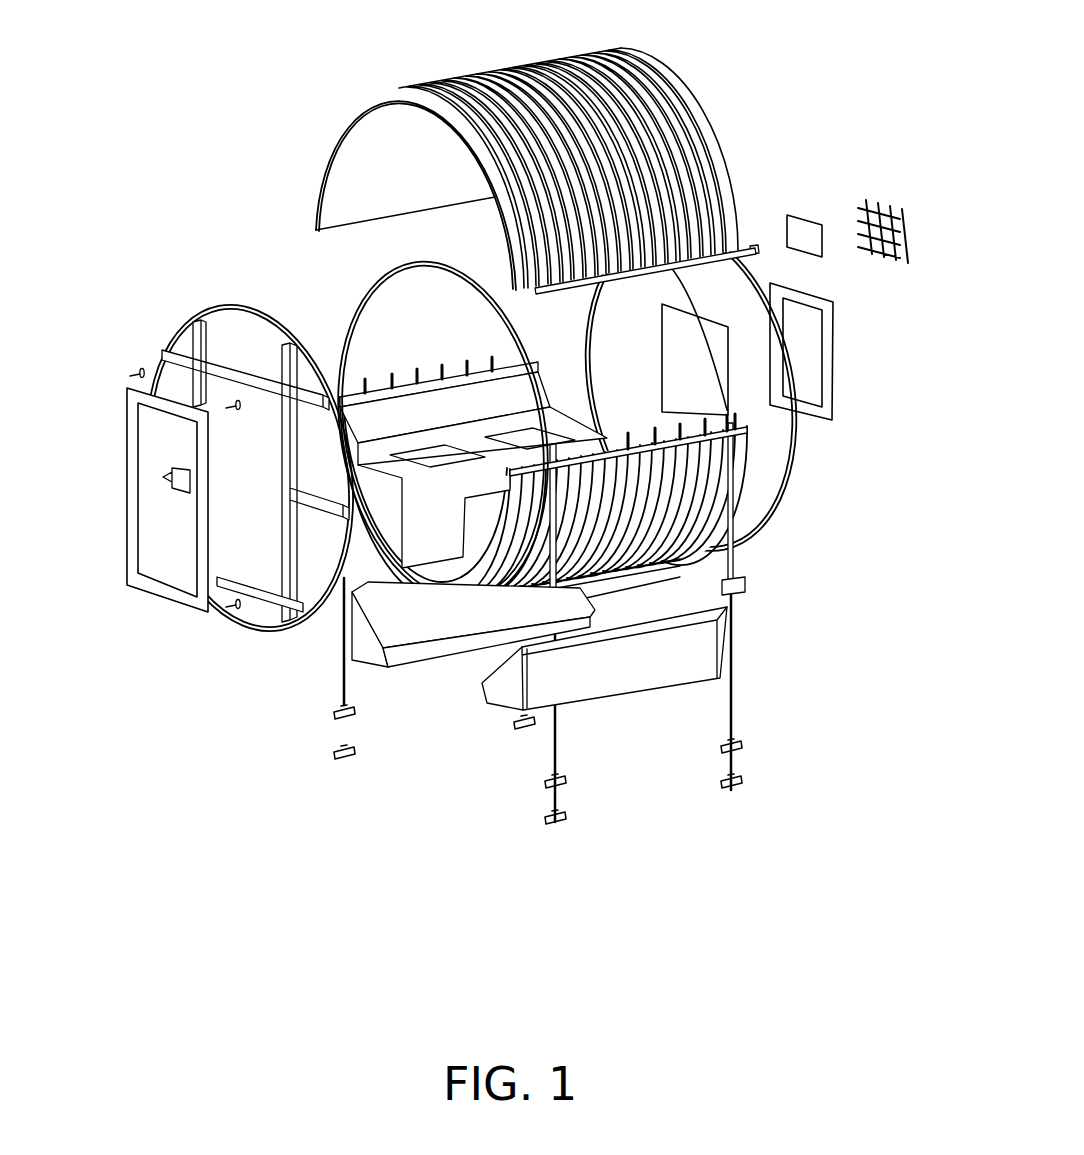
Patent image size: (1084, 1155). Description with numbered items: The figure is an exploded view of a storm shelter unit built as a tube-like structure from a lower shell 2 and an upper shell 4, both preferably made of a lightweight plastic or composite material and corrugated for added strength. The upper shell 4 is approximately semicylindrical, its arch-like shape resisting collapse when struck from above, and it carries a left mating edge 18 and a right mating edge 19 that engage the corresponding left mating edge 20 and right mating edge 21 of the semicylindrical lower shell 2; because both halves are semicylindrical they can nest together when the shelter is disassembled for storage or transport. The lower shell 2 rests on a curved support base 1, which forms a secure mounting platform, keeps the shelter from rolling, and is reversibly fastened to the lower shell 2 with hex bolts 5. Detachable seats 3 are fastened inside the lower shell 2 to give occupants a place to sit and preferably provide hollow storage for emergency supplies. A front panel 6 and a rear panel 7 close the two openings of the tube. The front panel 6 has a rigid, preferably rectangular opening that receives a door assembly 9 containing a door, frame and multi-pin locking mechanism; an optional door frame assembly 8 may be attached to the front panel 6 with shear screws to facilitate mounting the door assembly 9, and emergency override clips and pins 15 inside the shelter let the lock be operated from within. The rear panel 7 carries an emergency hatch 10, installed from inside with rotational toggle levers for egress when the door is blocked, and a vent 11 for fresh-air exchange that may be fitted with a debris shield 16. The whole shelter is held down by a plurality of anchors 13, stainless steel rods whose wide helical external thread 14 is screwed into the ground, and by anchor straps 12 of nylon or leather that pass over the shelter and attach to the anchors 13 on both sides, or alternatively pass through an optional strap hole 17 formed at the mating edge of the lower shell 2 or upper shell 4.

The support base 1 is at (495, 705).
The lower shell 2 is at (710, 540).
The seats 3 is at (398, 528).
The upper shell 4 is at (693, 125).
The hex bolts 5 is at (385, 322).
The front panel 6 is at (240, 300).
The rear panel 7 is at (790, 462).
The door frame assembly 8 is at (255, 600).
The door assembly 9 is at (132, 452).
The emergency hatch 10 is at (832, 352).
The vent 11 is at (820, 222).
The anchor straps 12 is at (735, 520).
The anchors 13 is at (728, 710).
The helical external thread 14 is at (728, 785).
The emergency override clip(s) and pin(s) 15 is at (140, 372).
The debris shield 16 is at (902, 228).
The strap hole 17 is at (540, 363).
The left mating edge 18 is at (318, 231).
The right mating edge 19 is at (757, 248).
The left mating edge 20 is at (440, 368).
The right mating edge 21 is at (640, 437).